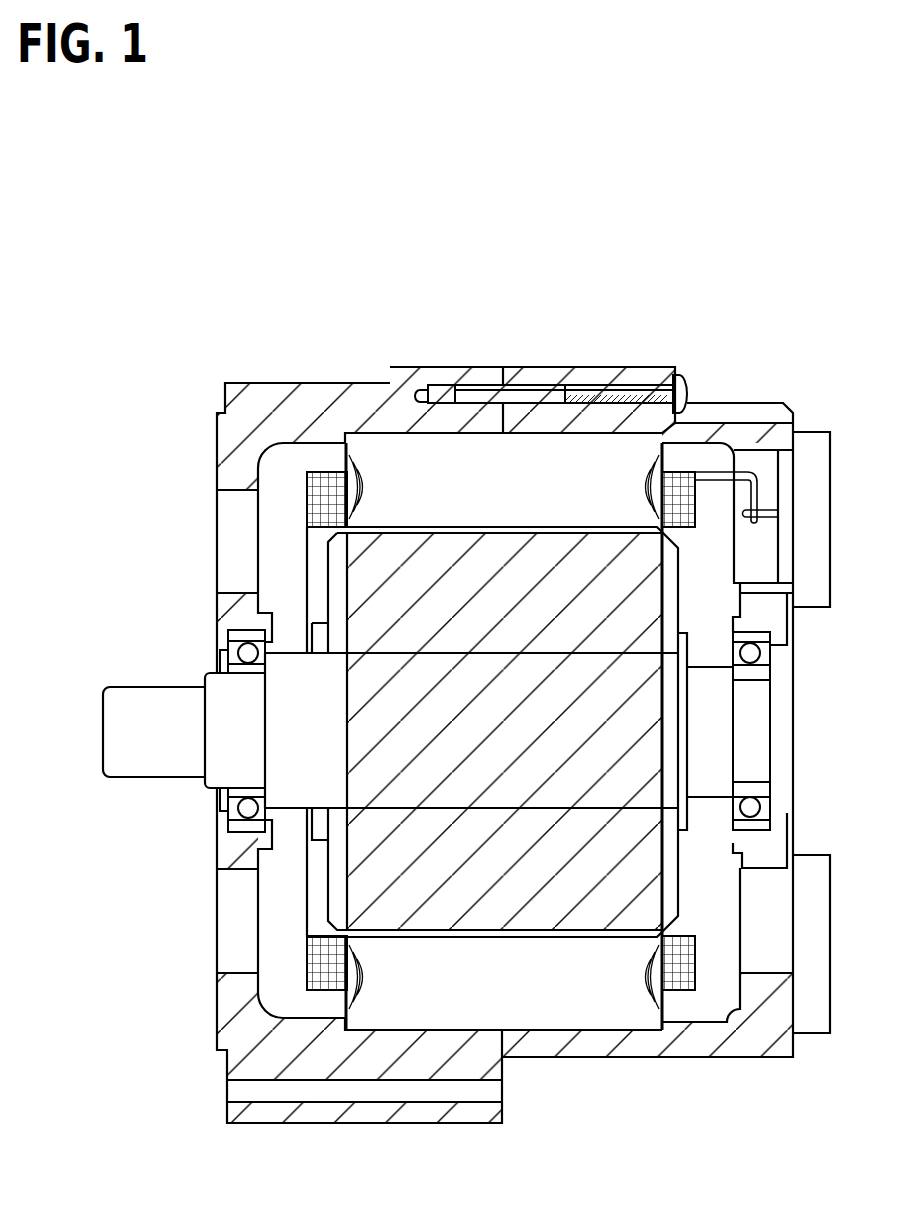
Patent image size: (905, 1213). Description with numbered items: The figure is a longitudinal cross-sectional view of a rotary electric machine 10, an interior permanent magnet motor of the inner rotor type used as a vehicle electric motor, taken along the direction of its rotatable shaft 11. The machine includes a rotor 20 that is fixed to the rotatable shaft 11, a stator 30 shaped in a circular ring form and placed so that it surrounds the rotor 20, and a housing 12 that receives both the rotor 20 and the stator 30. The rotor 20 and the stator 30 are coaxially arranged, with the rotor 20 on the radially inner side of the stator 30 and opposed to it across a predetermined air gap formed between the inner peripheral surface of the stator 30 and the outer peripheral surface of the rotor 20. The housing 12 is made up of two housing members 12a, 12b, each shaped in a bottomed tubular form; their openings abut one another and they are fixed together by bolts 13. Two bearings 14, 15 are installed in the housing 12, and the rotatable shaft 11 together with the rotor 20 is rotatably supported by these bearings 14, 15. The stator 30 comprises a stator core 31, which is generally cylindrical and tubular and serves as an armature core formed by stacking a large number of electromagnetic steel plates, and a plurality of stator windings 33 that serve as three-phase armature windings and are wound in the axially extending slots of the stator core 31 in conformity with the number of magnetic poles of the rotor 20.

The rotary electric machine 10 is at (794, 341).
The rotatable shaft 11 is at (155, 762).
The housing 12 is at (510, 639).
The housing member 12a is at (448, 368).
The housing member 12b is at (589, 366).
The bolt 13 is at (643, 393).
The bearing 14 is at (237, 631).
The bearing 15 is at (768, 645).
The rotor 20 is at (640, 572).
The stator 30 is at (568, 788).
The stator core 31 is at (592, 1020).
The stator winding 33 is at (680, 990).